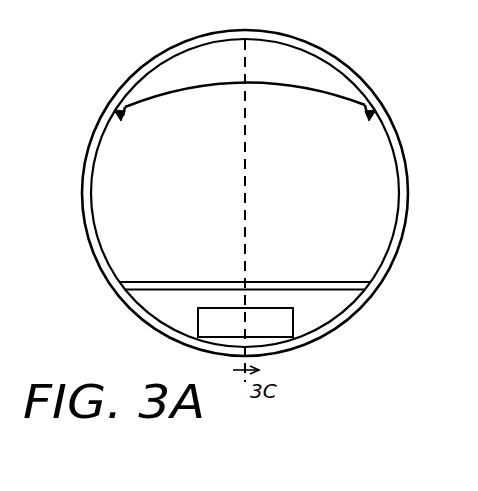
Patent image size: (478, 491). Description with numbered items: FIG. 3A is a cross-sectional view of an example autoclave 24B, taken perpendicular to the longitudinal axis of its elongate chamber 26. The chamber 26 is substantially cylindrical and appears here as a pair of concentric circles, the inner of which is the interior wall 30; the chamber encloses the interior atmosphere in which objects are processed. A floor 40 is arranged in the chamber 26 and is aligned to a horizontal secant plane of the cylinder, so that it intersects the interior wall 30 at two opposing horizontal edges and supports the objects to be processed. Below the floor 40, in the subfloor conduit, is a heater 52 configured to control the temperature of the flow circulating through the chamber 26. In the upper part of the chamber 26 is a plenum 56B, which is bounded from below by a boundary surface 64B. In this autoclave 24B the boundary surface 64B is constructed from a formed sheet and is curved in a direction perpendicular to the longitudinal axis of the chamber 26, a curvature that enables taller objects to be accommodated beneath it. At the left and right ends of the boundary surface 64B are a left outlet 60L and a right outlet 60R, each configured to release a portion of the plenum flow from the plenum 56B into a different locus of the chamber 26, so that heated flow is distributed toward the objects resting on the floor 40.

The elongate chamber 26 is at (394, 94).
The interior wall 30 is at (388, 255).
The floor 40 is at (163, 282).
The heater 52 is at (258, 334).
The plenum 56B is at (233, 73).
The boundary surface 64B is at (346, 97).
The left outlet 60L is at (140, 109).
The right outlet 60R is at (350, 109).
The autoclave 24B is at (398, 325).